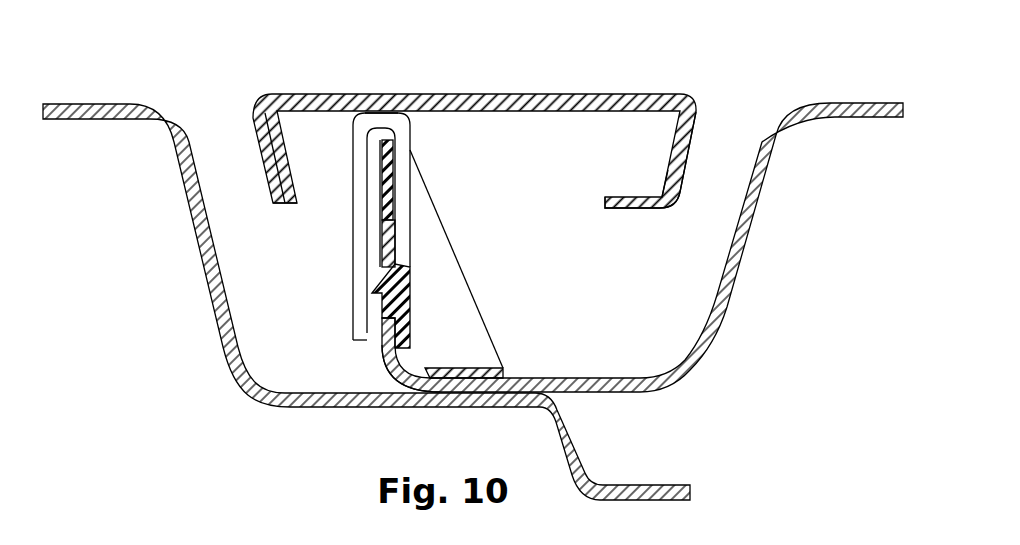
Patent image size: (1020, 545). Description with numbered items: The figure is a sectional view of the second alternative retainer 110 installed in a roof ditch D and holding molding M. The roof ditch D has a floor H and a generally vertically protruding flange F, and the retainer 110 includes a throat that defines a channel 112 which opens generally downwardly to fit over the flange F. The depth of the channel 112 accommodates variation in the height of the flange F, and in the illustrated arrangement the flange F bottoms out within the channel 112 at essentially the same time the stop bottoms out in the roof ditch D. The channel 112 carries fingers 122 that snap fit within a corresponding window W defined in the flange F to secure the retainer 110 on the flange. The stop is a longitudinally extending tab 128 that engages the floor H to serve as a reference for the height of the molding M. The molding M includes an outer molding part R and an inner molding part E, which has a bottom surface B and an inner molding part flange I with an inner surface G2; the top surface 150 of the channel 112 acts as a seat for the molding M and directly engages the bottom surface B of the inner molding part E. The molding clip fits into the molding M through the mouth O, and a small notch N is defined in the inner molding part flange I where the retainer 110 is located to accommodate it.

The alternative retainer 110 is at (511, 259).
The channel 112 is at (352, 152).
The fingers 122 is at (378, 290).
The tab 128 is at (440, 367).
The top surface 150 is at (375, 97).
The molding M is at (486, 135).
The inner molding part E is at (603, 97).
The inner molding part bottom surface B is at (493, 100).
The mouth O is at (457, 172).
The outer molding part R is at (690, 103).
The notch N is at (299, 205).
The window W is at (390, 317).
The flange F is at (387, 366).
The floor H is at (662, 392).
The roof ditch D is at (688, 288).
The inner molding part flange I is at (632, 197).
The inner surface G2 is at (606, 202).